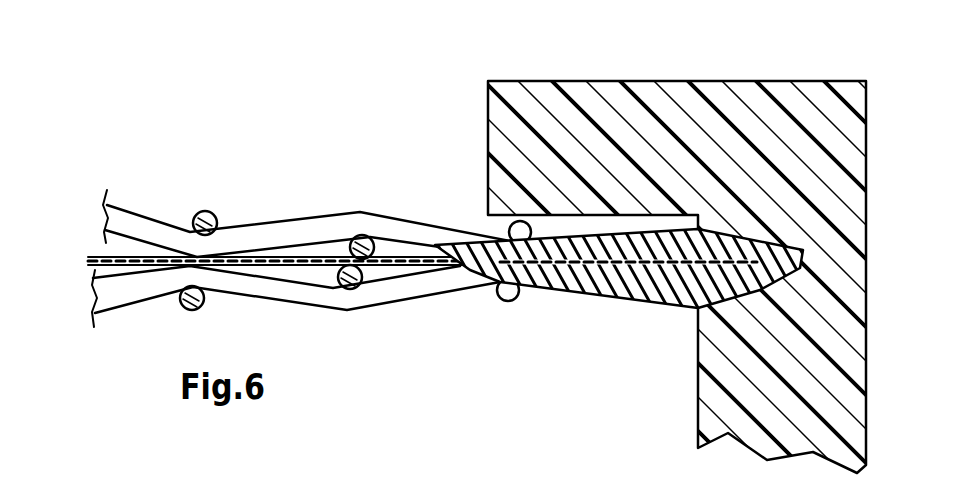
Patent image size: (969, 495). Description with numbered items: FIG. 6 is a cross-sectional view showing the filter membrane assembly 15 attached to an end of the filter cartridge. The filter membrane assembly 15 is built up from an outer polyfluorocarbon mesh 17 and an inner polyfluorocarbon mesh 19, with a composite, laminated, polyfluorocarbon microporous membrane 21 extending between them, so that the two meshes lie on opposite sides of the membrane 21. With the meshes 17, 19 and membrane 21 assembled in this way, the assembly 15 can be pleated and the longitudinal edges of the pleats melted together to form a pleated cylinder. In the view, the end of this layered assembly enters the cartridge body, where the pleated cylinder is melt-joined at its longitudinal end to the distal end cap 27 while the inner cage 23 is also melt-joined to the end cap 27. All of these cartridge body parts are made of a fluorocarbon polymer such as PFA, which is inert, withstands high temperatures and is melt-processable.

The filter membrane assembly 15 is at (238, 155).
The outer polyfluorocarbon mesh 17 is at (302, 225).
The inner polyfluorocarbon mesh 19 is at (290, 290).
The composite laminated polyfluorocarbon microporous membrane 21 is at (92, 255).
The inner cage 23 is at (525, 105).
The distal end cap 27 is at (708, 132).